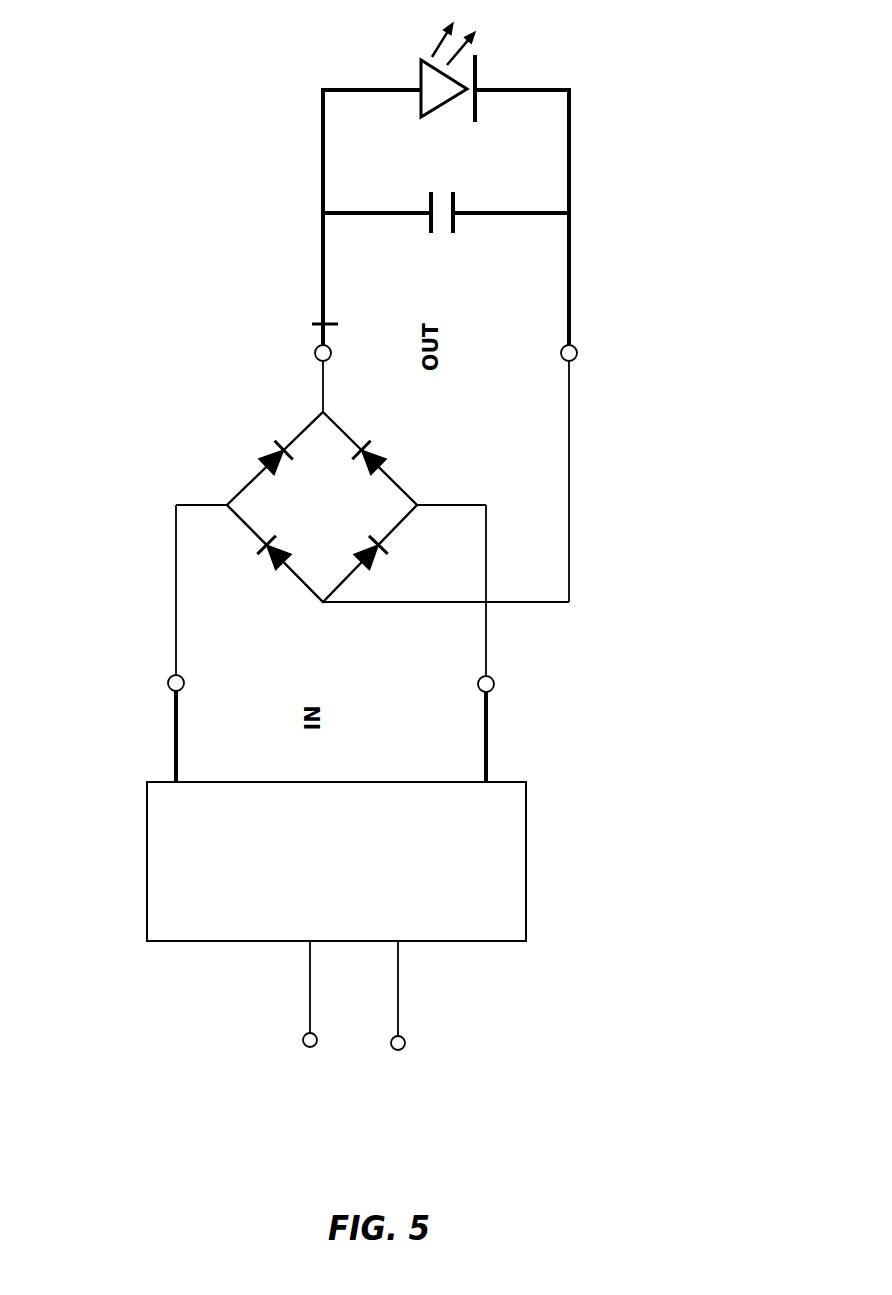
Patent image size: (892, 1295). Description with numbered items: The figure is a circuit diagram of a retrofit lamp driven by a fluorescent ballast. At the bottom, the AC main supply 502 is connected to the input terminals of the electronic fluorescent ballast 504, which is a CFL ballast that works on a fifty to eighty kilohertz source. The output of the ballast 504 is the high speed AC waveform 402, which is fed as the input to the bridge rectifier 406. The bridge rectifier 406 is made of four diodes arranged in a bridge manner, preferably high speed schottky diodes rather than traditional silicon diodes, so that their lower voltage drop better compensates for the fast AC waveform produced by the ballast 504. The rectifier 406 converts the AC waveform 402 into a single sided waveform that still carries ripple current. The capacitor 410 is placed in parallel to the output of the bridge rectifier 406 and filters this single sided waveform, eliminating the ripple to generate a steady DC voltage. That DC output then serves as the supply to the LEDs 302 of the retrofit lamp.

The LEDs 302 is at (398, 67).
The capacitor 410 is at (458, 223).
The bridge rectifier 406 is at (238, 473).
The AC waveform 402 is at (168, 683).
The fluorescent ballast 504 is at (526, 856).
The AC main supply 502 is at (303, 1040).